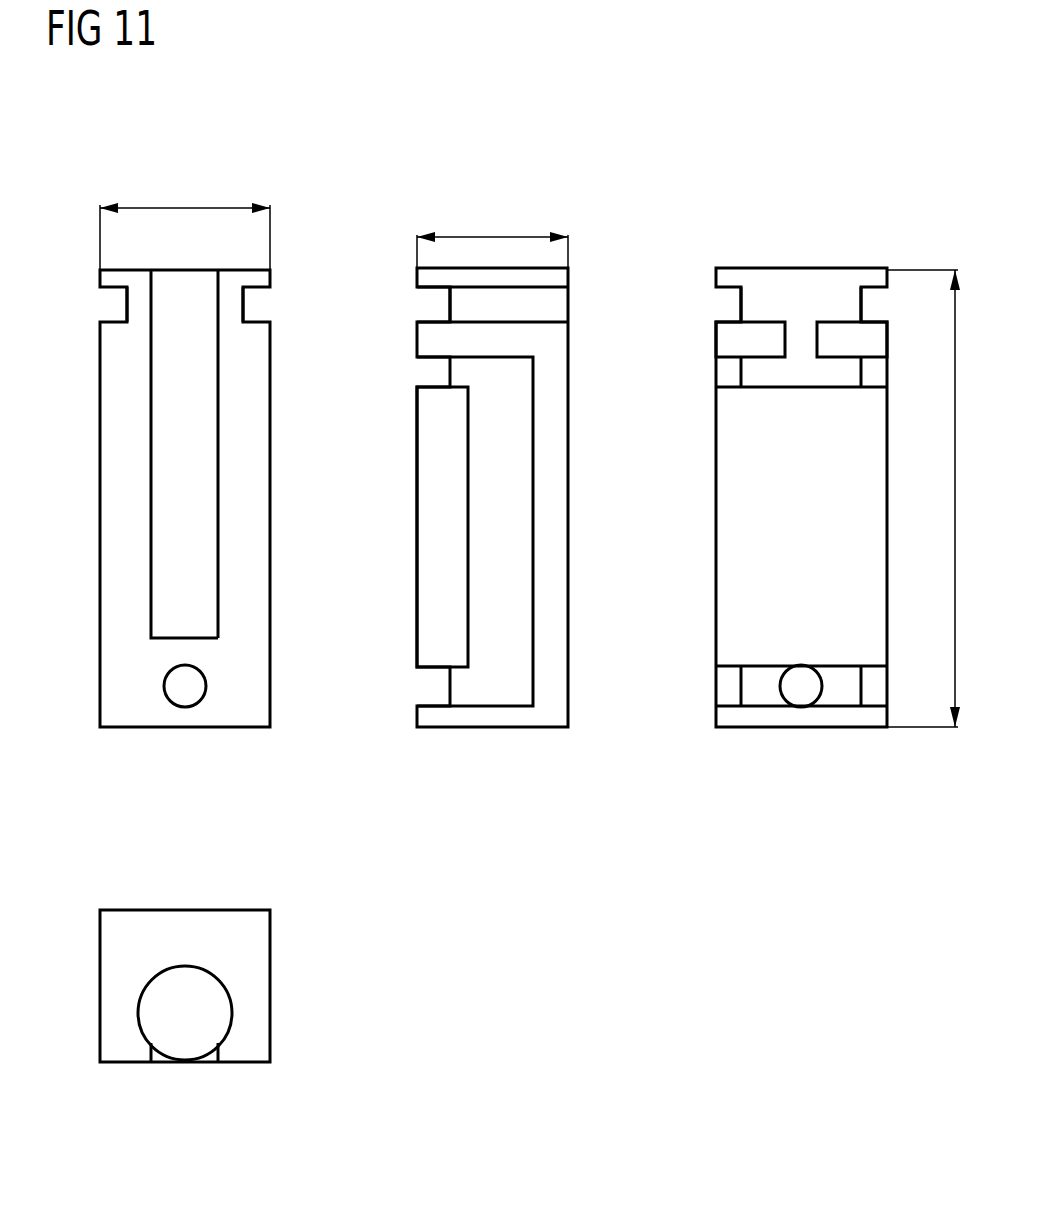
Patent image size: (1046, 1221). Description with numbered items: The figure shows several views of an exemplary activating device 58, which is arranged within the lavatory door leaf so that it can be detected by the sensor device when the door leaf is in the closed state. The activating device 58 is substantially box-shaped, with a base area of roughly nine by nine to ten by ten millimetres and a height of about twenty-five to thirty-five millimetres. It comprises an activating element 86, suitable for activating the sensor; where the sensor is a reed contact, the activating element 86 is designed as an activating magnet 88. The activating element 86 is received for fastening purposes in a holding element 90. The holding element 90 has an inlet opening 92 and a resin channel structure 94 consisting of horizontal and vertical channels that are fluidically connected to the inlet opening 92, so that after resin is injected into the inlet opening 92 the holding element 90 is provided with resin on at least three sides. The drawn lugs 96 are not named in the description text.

The activating device 58 is at (128, 185).
The activating element 86 is at (208, 275).
The activating magnet 88 is at (164, 275).
The holding element 90 is at (114, 406).
The inlet opening 92 is at (176, 686).
The resin channel structure 94 is at (256, 303).
The lug 96 is at (112, 303).